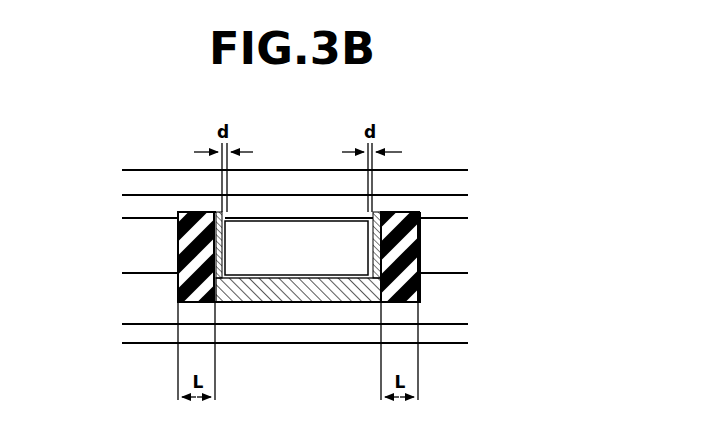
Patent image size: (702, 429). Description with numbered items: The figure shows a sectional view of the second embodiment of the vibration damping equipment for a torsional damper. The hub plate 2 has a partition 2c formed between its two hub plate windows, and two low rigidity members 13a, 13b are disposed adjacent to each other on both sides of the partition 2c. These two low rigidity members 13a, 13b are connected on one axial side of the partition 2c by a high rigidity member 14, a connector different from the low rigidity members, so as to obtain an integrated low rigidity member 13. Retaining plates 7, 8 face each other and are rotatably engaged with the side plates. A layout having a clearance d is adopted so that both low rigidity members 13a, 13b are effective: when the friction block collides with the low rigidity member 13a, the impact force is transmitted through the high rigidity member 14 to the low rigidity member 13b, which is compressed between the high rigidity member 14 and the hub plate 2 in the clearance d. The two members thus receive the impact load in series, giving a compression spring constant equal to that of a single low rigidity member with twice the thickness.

The hub plate 2 is at (158, 237).
The partition 2c is at (290, 237).
The retaining plate 7 is at (452, 335).
The retaining plate 8 is at (423, 181).
The integrated low rigidity member 13 is at (260, 308).
The low rigidity member 13a is at (412, 288).
The low rigidity member 13b is at (193, 287).
The high rigidity member 14 is at (330, 288).